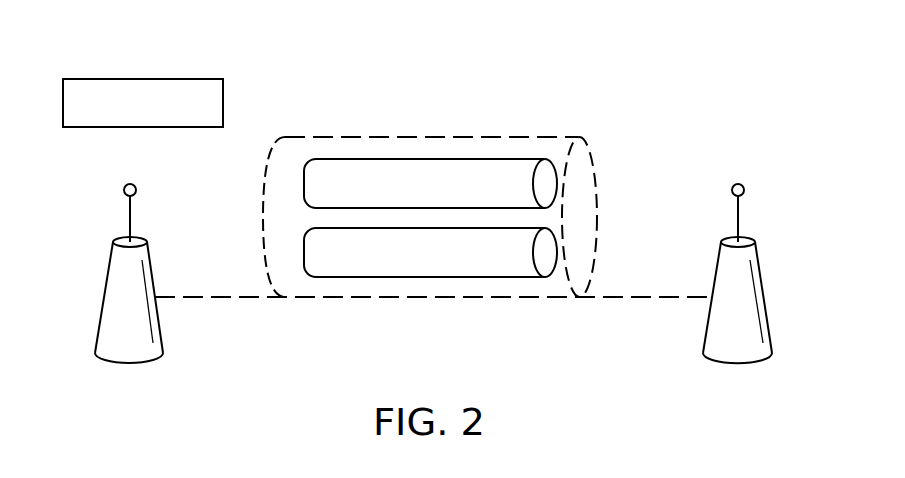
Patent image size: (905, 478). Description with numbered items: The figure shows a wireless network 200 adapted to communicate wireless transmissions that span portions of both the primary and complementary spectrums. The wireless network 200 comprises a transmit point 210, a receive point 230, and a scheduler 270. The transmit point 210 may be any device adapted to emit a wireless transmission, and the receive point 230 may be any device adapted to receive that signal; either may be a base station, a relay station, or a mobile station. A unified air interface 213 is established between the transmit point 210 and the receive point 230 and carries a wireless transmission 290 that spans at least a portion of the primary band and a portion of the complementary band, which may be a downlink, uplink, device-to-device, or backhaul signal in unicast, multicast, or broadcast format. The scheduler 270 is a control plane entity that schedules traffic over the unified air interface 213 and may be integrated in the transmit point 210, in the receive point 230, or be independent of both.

The wireless network 200 is at (582, 62).
The transmit point 210 is at (128, 368).
The unified air interface 213 is at (430, 300).
The receive point 230 is at (740, 368).
The scheduler 270 is at (142, 79).
The wireless transmission 290 is at (470, 130).